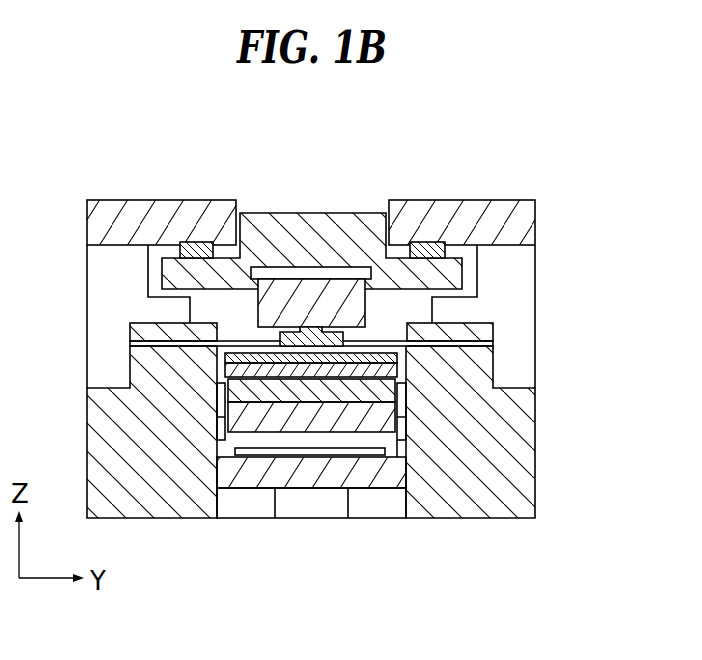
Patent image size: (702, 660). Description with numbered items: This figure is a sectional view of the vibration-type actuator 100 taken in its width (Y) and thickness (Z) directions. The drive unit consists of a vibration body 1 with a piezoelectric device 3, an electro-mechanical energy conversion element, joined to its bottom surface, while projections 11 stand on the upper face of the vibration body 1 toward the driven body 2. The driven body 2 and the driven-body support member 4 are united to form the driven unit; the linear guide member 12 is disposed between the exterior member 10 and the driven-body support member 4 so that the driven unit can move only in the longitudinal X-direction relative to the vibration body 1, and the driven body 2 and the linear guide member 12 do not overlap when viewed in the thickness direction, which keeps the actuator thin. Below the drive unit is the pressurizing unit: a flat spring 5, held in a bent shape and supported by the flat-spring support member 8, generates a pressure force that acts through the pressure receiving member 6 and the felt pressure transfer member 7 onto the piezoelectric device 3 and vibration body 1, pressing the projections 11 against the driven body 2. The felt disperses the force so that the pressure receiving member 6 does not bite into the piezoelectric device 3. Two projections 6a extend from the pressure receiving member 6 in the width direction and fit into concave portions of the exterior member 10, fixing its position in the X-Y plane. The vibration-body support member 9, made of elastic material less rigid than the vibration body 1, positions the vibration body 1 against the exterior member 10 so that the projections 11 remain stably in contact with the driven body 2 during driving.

The vibration-type actuator 100 is at (530, 130).
The vibration body 1 is at (223, 356).
The driven body 2 is at (281, 302).
The piezoelectric device 3 is at (392, 371).
The driven-body support member 4 is at (305, 230).
The flat spring 5 is at (364, 453).
The pressure receiving member 6 is at (262, 423).
The projections 6a is at (219, 432).
The pressure transfer member 7 is at (237, 395).
The flat-spring support member 8 is at (312, 478).
The vibration-body support member 9 is at (240, 338).
The exterior member 10 is at (521, 466).
The projections 11 is at (333, 340).
The linear guide member 12 is at (197, 250).